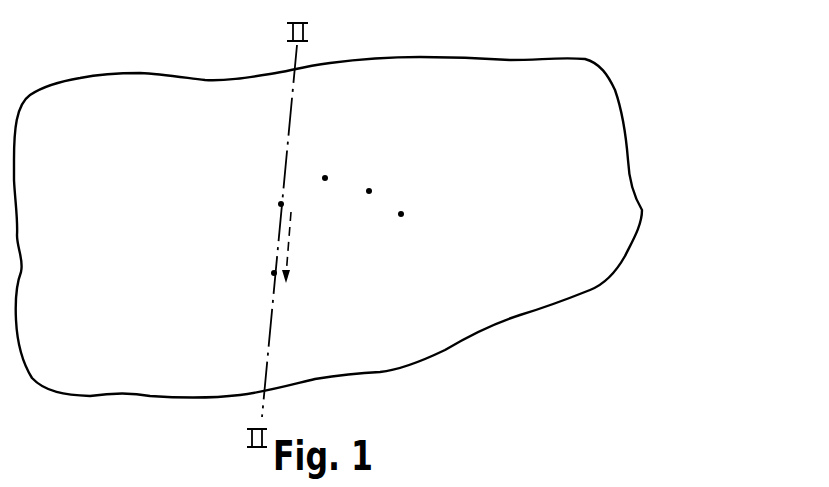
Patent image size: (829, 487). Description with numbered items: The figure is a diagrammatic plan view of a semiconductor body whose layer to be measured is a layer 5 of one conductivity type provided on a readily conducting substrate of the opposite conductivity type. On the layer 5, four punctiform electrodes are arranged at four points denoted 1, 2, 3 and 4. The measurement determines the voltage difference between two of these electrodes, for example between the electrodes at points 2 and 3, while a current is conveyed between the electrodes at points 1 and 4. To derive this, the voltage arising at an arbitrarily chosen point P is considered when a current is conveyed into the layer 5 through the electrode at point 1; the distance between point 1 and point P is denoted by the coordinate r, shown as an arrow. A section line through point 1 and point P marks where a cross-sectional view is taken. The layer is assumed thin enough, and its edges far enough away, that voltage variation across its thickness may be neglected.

The point 1 is at (290, 203).
The point 2 is at (325, 165).
The point 3 is at (369, 178).
The point 4 is at (401, 201).
The layer 5 is at (464, 80).
The arbitrary point P is at (264, 273).
The coordinate r is at (295, 247).